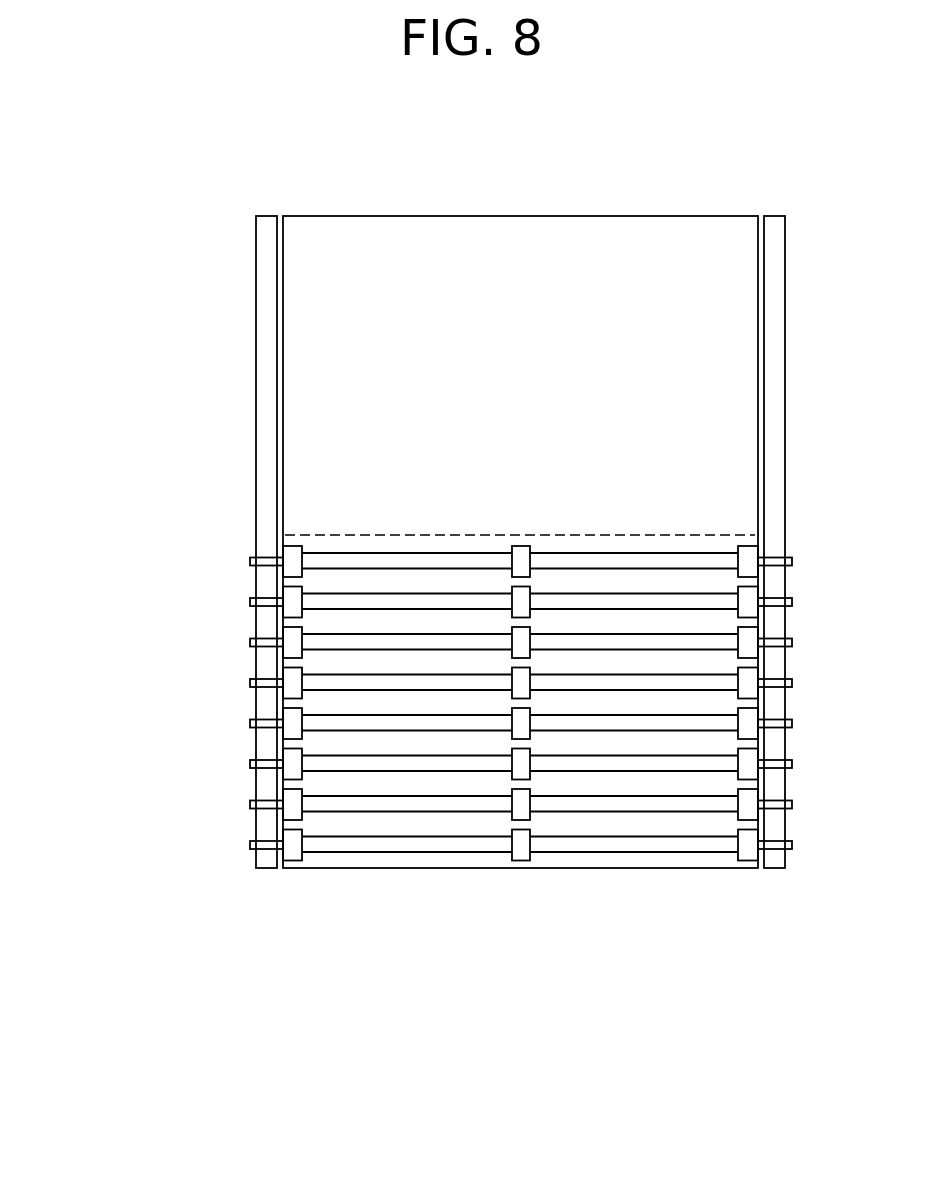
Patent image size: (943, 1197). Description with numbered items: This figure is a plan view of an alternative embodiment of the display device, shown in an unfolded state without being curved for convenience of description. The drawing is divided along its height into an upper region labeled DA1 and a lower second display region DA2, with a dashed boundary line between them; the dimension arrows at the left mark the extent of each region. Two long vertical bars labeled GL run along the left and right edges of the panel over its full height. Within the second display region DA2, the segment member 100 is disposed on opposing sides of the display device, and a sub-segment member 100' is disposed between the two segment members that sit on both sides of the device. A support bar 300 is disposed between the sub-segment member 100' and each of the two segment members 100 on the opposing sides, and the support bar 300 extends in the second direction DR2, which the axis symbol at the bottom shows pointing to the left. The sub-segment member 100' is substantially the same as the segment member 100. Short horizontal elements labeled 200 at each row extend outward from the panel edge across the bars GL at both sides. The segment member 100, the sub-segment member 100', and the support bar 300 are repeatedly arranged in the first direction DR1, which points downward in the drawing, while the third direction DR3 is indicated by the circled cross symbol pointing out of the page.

The gate line GL is at (263, 452).
The segment member 100 is at (469, 542).
The sub-segment member 100' is at (518, 671).
The connection electrode 200 is at (250, 561).
The support bar 300 is at (318, 569).
The first display area DA1 is at (165, 216).
The second display region DA2 is at (165, 535).
The first direction DR1 is at (170, 977).
The second direction DR2 is at (163, 970).
The third direction DR3 is at (165, 975).